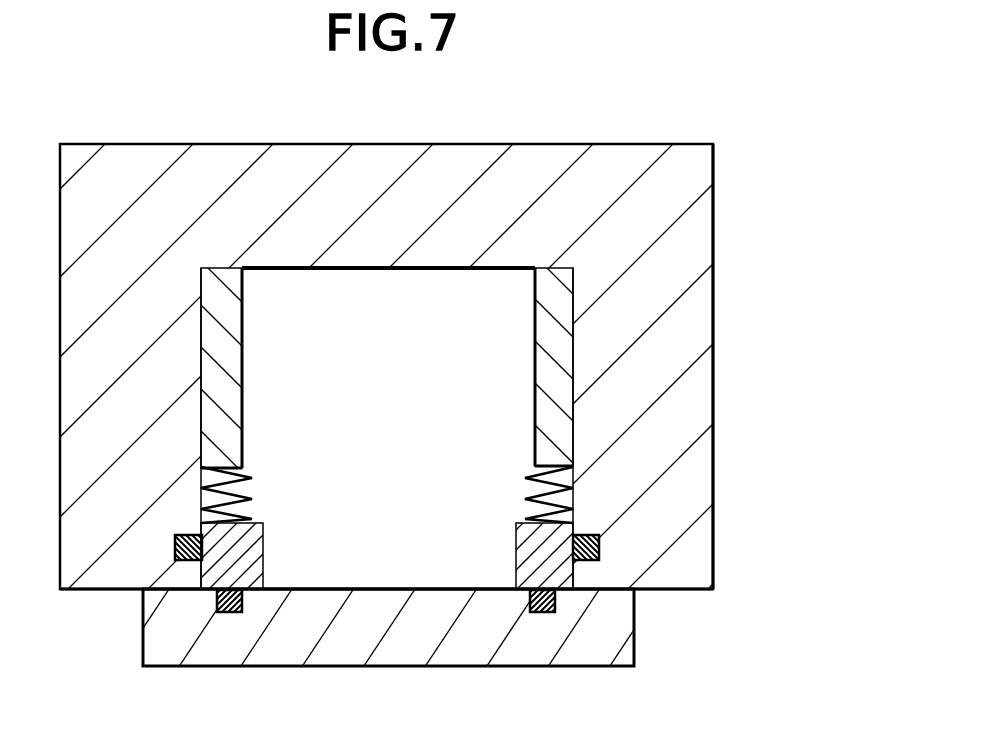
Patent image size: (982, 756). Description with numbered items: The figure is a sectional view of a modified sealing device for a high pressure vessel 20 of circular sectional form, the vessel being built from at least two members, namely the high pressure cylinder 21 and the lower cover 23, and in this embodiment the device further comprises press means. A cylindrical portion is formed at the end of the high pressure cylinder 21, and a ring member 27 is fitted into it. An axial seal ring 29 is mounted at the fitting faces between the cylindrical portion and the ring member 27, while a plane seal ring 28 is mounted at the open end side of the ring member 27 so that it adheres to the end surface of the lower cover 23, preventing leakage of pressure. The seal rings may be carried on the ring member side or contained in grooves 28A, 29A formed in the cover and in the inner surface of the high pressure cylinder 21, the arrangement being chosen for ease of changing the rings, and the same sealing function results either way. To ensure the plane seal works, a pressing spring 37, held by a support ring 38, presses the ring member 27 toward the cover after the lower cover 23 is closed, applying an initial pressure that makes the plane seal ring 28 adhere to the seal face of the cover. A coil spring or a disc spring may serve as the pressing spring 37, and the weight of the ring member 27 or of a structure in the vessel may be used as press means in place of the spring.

The high pressure vessel 20 is at (644, 136).
The high pressure cylinder 21 is at (636, 232).
The lower cover 23 is at (418, 650).
The ring member 27 is at (532, 553).
The plane seal ring 28 is at (548, 614).
The groove 28A is at (537, 614).
The axial seal ring 29 is at (600, 535).
The groove 29A is at (600, 547).
The pressing spring 37 is at (573, 477).
The support ring 38 is at (556, 322).